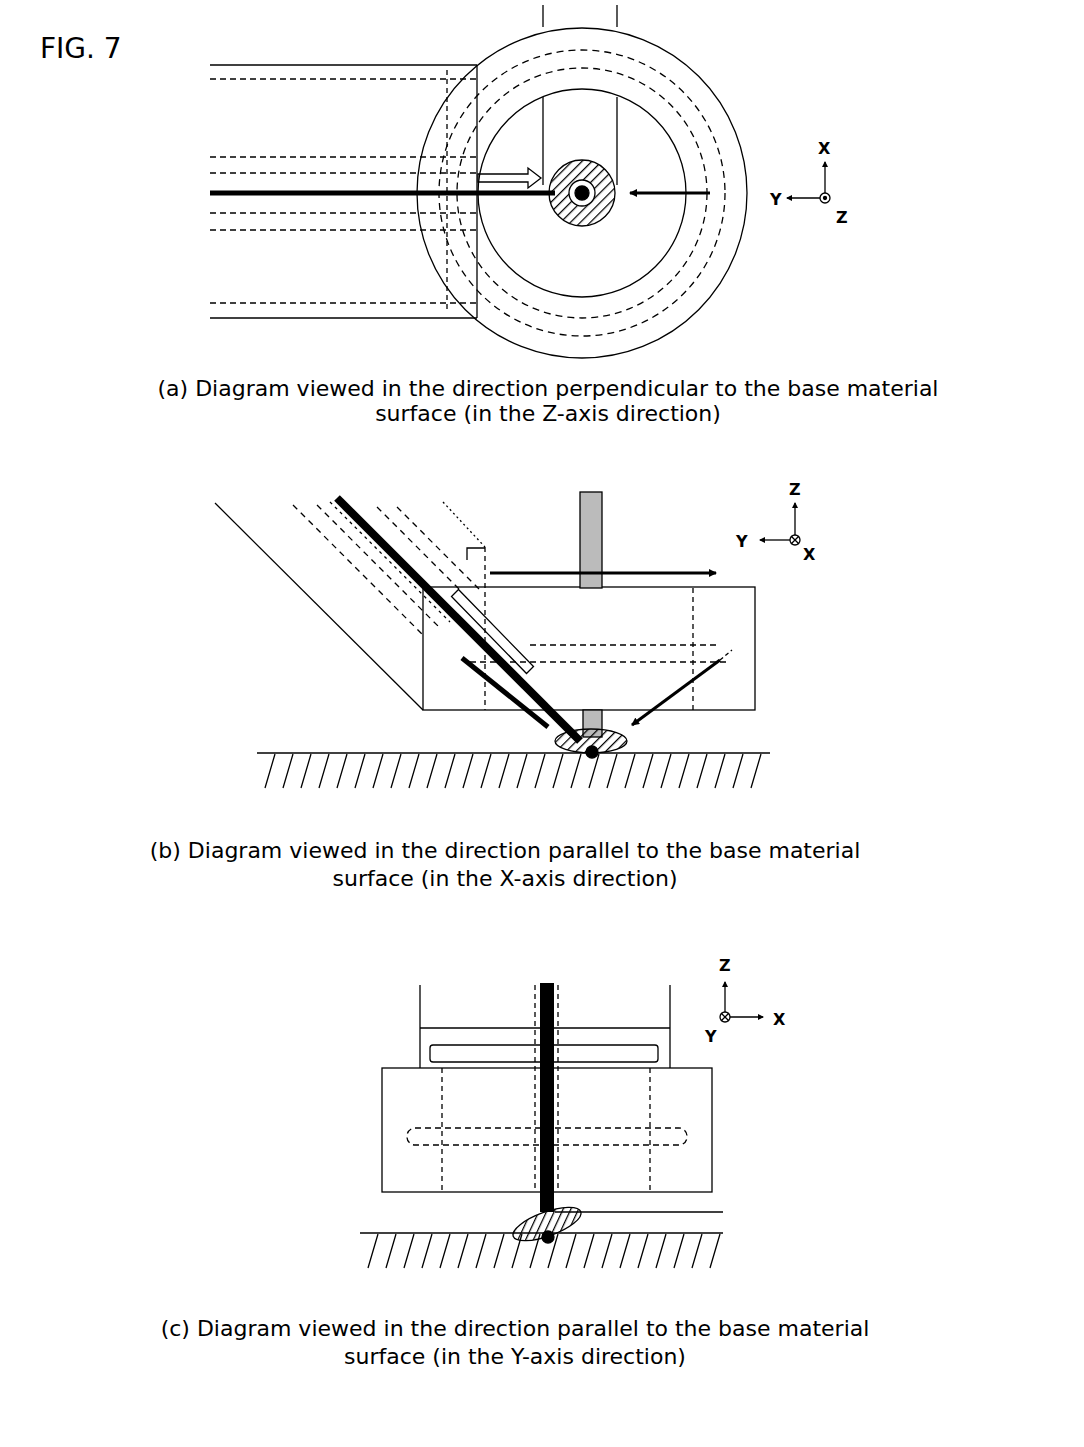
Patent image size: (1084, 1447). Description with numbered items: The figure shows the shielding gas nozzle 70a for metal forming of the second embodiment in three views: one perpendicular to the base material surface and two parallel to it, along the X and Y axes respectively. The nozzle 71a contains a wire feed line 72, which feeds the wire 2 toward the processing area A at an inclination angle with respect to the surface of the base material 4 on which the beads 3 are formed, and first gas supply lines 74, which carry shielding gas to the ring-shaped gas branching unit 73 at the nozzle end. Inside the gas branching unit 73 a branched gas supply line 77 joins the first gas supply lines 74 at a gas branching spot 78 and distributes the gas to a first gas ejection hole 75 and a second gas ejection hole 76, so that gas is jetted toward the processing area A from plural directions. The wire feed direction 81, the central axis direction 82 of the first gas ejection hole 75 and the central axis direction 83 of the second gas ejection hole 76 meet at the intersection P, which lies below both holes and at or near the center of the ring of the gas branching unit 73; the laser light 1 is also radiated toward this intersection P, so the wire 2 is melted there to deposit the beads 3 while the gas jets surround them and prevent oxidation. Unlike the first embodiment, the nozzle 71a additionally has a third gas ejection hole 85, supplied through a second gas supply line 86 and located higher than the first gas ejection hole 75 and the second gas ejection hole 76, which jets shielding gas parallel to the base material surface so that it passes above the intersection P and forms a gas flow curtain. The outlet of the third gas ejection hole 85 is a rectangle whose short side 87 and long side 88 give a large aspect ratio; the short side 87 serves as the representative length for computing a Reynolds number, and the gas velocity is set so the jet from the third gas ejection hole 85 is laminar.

The laser light 1 is at (620, 176).
The wire 2 is at (245, 205).
The beads 3 is at (627, 123).
The base material 4 is at (305, 755).
The shielding gas nozzle for metal forming 70a is at (767, 127).
The nozzle 71a is at (335, 65).
The wire feed line 72 is at (338, 185).
The gas branching unit 73 is at (700, 310).
The first gas supply lines 74 is at (273, 157).
The first gas ejection hole 75 is at (467, 178).
The second gas ejection hole 76 is at (696, 185).
The branched gas supply line 77 is at (712, 257).
The gas branching spot 78 is at (447, 233).
The wire feed direction 81 is at (490, 174).
The central axis direction of the first gas ejection hole 82 is at (497, 712).
The central axis direction of the second gas ejection hole 83 is at (660, 196).
The third gas ejection hole 85 is at (467, 560).
The second gas supply line 86 is at (407, 530).
The short side 87 is at (435, 1055).
The long side 88 is at (615, 1043).
The processing area A is at (572, 173).
The intersection P is at (560, 214).